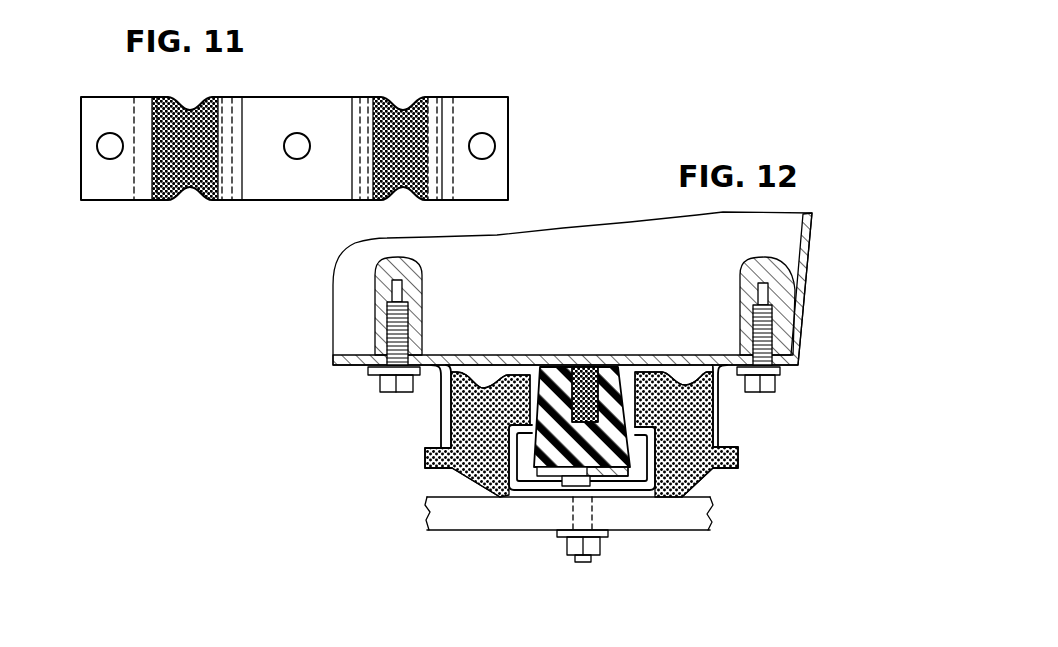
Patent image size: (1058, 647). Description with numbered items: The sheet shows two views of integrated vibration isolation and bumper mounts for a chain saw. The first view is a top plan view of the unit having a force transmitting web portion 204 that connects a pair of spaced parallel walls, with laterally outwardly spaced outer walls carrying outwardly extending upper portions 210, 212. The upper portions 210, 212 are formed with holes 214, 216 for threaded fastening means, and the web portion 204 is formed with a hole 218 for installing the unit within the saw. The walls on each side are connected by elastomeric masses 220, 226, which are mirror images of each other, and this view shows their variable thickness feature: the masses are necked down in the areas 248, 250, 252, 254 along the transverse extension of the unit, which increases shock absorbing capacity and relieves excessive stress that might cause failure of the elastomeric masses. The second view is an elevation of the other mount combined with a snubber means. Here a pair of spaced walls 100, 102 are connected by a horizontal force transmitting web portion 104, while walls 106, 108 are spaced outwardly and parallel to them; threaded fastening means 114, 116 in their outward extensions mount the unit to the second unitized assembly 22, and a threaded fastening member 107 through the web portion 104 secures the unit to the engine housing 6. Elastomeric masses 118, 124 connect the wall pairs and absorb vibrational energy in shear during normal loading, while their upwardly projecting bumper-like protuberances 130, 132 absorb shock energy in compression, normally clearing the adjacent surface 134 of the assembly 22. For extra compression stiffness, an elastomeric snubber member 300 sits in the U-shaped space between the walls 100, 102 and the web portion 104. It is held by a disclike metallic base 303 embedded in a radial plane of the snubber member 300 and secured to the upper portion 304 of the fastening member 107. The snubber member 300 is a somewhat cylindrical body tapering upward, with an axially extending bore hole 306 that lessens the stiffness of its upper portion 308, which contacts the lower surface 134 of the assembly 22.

In FIG. 12, the engine housing 6 is at (433, 512).
In FIG. 12, the second unitized assembly 22 is at (806, 303).
In FIG. 12, the spaced wall 100 is at (510, 447).
In FIG. 12, the spaced wall 102 is at (658, 453).
In FIG. 12, the force transmitting web portion 104 is at (518, 493).
In FIG. 12, the outer wall 106 is at (446, 420).
In FIG. 12, the threaded fastening member 107 is at (557, 535).
In FIG. 12, the outer wall 108 is at (720, 417).
In FIG. 12, the threaded fastening means 114 is at (388, 320).
In FIG. 12, the threaded fastening means 116 is at (753, 322).
In FIG. 12, the elastomeric mass 118 is at (460, 463).
In FIG. 12, the elastomeric mass 124 is at (705, 468).
In FIG. 12, the bumper-like protuberance 130 is at (510, 382).
In FIG. 12, the bumper-like protuberance 132 is at (646, 385).
In FIG. 12, the adjacent surface 134 is at (676, 368).
In FIG. 11, the force transmitting web portion 204 is at (333, 108).
In FIG. 11, the upper portion 210 is at (85, 155).
In FIG. 11, the upper portion 212 is at (497, 178).
In FIG. 11, the hole 214 is at (110, 138).
In FIG. 11, the hole 216 is at (478, 140).
In FIG. 11, the hole 218 is at (297, 140).
In FIG. 11, the elastomeric mass 220 is at (203, 165).
In FIG. 11, the elastomeric mass 226 is at (380, 185).
In FIG. 11, the necked-down area 248 is at (190, 108).
In FIG. 11, the necked-down area 250 is at (190, 190).
In FIG. 11, the necked-down area 252 is at (403, 188).
In FIG. 11, the necked-down area 254 is at (403, 110).
In FIG. 12, the elastomeric snubber member 300 is at (542, 378).
In FIG. 12, the disclike metallic base 303 is at (622, 474).
In FIG. 12, the upper portion of threaded fastening member 304 is at (605, 478).
In FIG. 12, the axially extending bore hole 306 is at (598, 380).
In FIG. 12, the upper portion of snubber member 308 is at (572, 385).